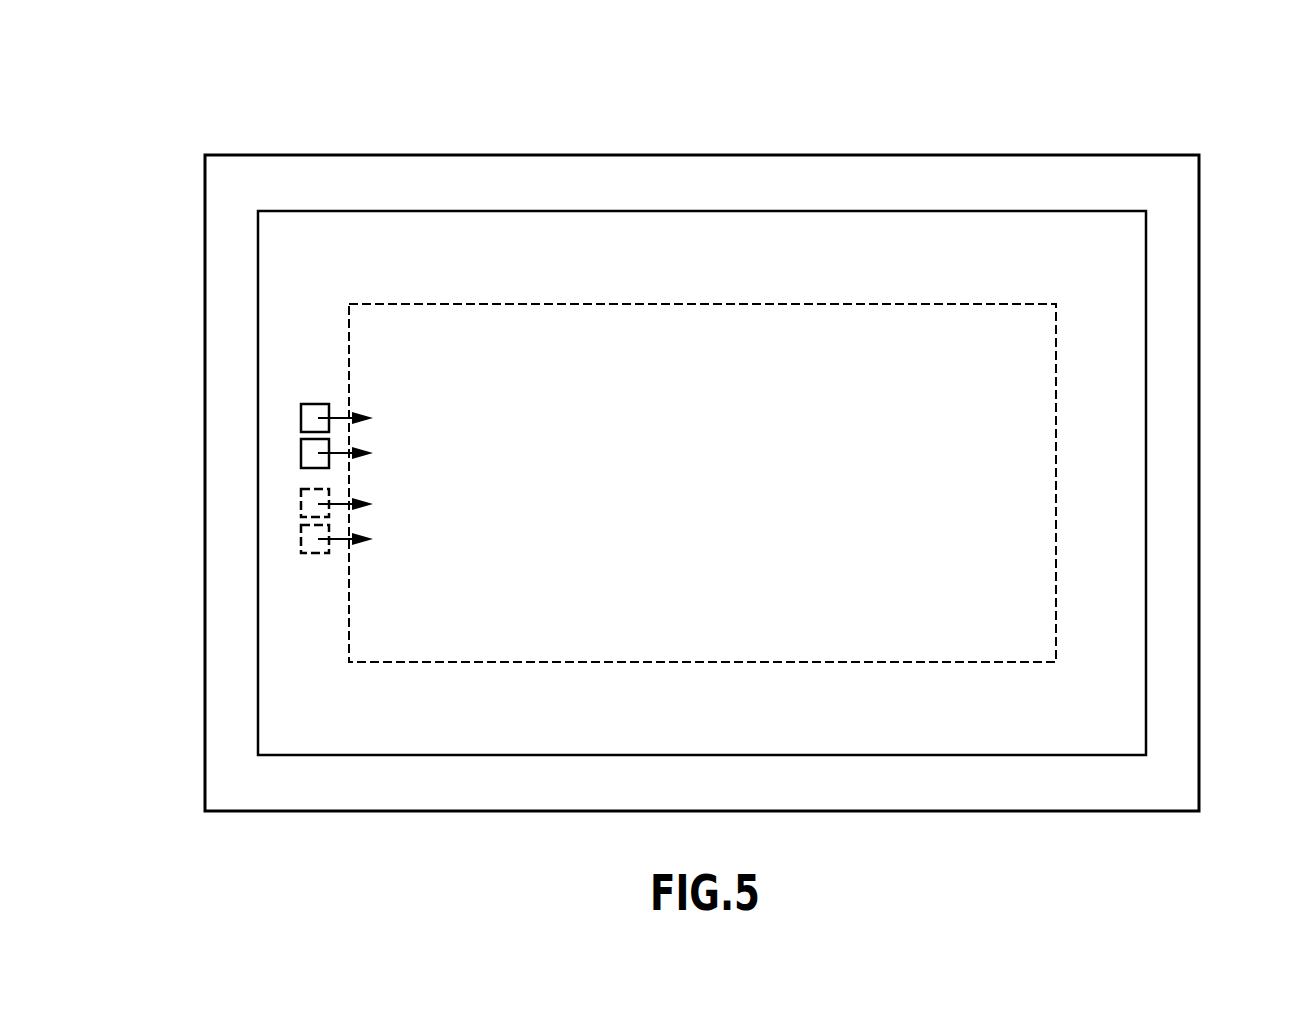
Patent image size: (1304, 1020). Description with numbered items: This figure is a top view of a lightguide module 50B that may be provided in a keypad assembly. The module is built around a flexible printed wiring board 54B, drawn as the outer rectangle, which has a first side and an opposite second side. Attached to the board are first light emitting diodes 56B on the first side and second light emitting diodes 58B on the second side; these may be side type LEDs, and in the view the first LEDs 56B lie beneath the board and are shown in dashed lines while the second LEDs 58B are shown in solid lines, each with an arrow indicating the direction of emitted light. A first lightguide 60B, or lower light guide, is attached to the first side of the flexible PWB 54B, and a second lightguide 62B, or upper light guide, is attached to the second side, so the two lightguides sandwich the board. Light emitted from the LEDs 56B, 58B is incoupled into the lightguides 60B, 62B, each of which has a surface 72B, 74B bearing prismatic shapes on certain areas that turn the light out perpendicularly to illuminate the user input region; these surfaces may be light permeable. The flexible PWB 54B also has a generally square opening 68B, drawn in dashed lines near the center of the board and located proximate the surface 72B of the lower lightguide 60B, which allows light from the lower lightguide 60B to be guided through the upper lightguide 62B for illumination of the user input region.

The lightguide module 50B is at (214, 84).
The flexible printed wiring board 54B is at (1172, 205).
The first light emitting diodes 56B is at (301, 527).
The second light emitting diodes 58B is at (301, 445).
The first lightguide 60B is at (1095, 462).
The second lightguide 62B is at (1097, 335).
The opening 68B is at (470, 305).
The surface of first lightguide 72B is at (570, 632).
The surface of second lightguide 74B is at (713, 352).